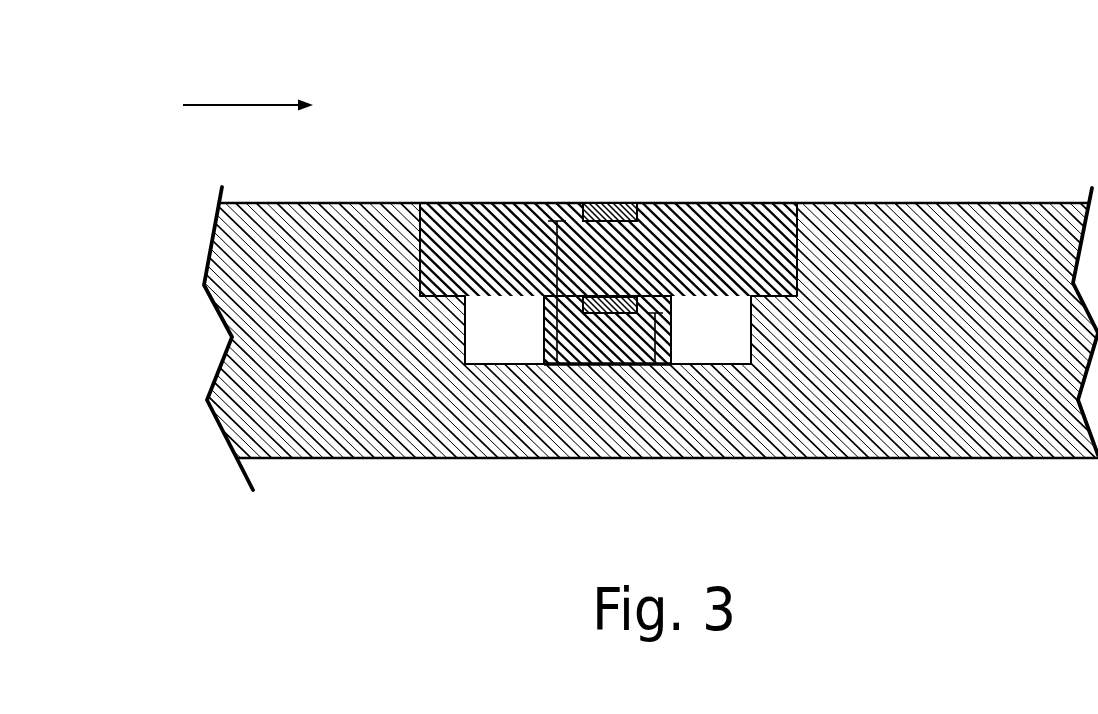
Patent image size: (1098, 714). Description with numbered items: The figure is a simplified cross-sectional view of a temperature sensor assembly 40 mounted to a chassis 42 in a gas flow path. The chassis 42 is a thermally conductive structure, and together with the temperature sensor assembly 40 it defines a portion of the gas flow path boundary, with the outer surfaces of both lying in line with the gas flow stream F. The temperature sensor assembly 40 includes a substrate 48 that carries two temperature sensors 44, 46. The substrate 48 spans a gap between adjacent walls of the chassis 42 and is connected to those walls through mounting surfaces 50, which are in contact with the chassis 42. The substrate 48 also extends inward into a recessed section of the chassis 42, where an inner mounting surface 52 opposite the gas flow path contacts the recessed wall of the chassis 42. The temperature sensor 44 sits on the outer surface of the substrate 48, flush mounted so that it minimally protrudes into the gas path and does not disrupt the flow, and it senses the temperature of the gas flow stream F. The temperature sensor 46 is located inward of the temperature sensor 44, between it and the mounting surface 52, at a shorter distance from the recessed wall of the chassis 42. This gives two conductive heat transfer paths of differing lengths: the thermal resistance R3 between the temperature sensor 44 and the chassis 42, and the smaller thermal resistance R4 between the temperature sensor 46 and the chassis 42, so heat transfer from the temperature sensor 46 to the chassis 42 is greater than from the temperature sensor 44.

The temperature sensor assembly 40 is at (549, 276).
The chassis 42 is at (930, 334).
The temperature sensor 44 is at (612, 203).
The temperature sensor 46 is at (612, 297).
The substrate 48 is at (445, 250).
The mounting surfaces 50 is at (405, 243).
The mounting surface 52 is at (600, 378).
The thermal resistance R3 is at (557, 277).
The thermal resistance R4 is at (653, 336).
The gas flow stream F is at (243, 105).